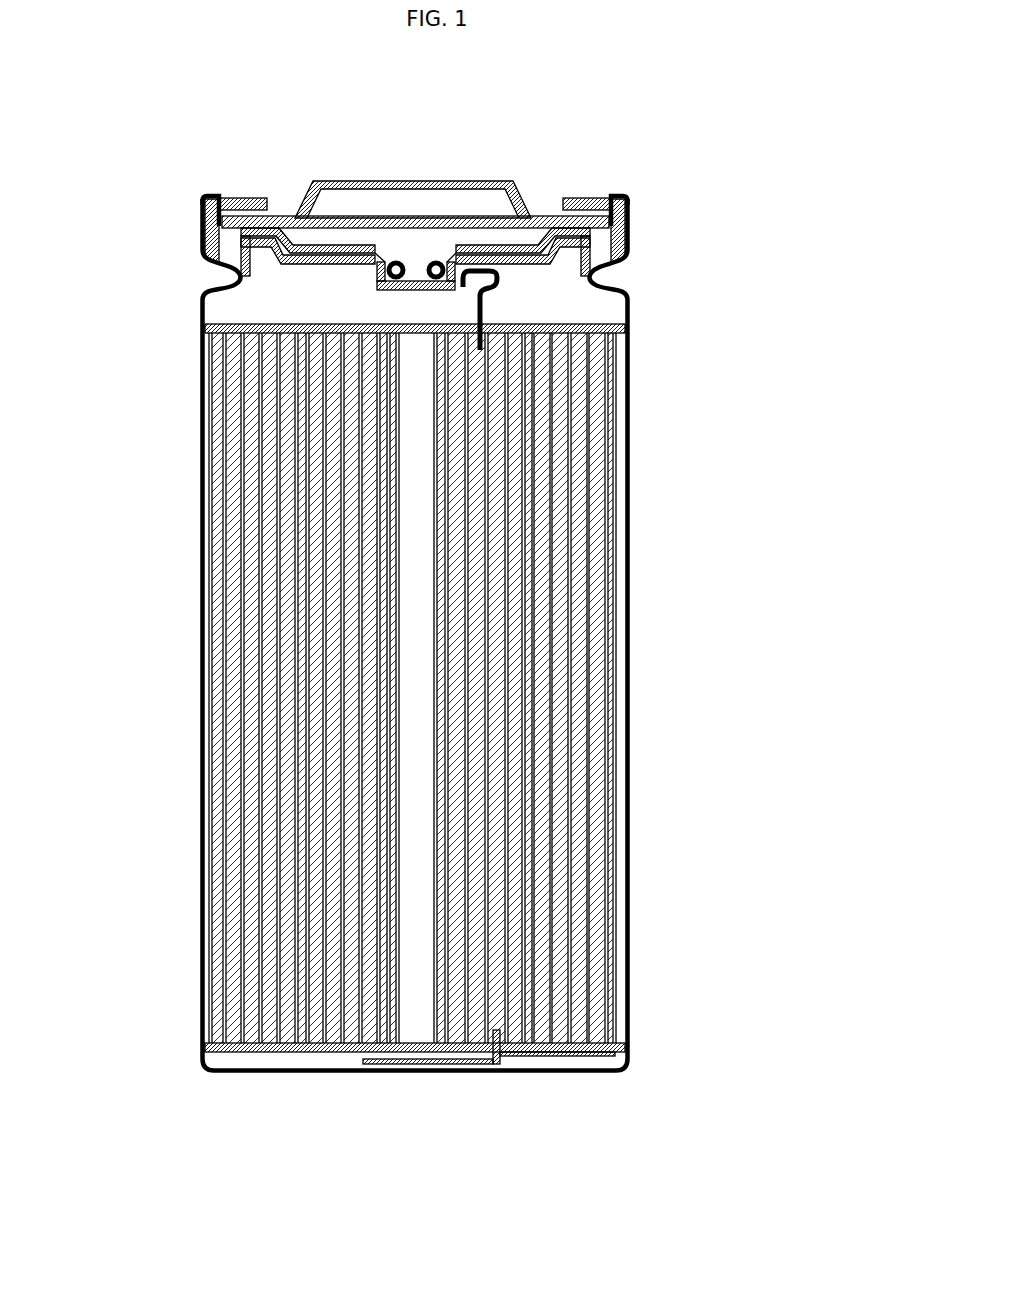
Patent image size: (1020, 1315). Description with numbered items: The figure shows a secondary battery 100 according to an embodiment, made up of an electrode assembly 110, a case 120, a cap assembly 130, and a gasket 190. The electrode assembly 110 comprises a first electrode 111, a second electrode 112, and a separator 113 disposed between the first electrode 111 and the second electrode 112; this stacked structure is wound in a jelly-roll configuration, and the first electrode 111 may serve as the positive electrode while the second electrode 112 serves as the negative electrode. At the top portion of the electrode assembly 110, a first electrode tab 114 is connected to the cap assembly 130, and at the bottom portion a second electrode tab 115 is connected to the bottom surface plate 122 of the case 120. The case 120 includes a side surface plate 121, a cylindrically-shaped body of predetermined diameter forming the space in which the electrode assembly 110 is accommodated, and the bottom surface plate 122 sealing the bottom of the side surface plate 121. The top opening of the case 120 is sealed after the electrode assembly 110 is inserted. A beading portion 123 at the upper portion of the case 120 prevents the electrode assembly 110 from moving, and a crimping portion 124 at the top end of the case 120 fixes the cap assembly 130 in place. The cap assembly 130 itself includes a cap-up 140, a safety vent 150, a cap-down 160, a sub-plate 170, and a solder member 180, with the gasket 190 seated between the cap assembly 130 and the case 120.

The secondary battery 100 is at (163, 128).
The electrode assembly 110 is at (477, 707).
The first electrode 111 is at (633, 437).
The second electrode 112 is at (633, 369).
The separator 113 is at (633, 405).
The first electrode tab 114 is at (487, 307).
The second electrode tab 115 is at (455, 1077).
The case 120 is at (645, 535).
The side surface plate 121 is at (633, 881).
The bottom surface plate 122 is at (538, 1077).
The beading portion 123 is at (603, 272).
The crimping portion 124 is at (633, 205).
The cap assembly 130 is at (436, 101).
The cap-up 140 is at (462, 218).
The safety vent 150 is at (496, 228).
The cap-down 160 is at (534, 233).
The sub-plate 170 is at (327, 240).
The solder member 180 is at (411, 257).
The gasket 190 is at (632, 240).